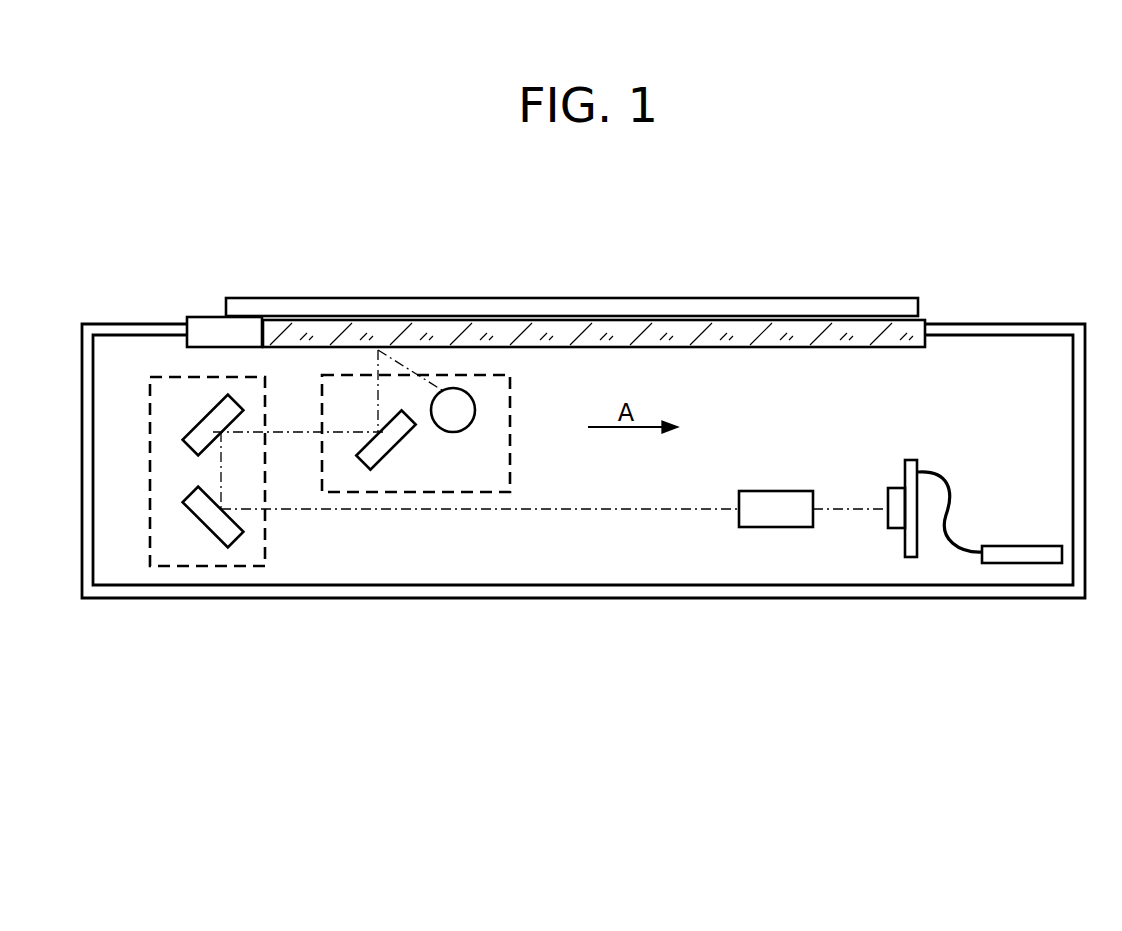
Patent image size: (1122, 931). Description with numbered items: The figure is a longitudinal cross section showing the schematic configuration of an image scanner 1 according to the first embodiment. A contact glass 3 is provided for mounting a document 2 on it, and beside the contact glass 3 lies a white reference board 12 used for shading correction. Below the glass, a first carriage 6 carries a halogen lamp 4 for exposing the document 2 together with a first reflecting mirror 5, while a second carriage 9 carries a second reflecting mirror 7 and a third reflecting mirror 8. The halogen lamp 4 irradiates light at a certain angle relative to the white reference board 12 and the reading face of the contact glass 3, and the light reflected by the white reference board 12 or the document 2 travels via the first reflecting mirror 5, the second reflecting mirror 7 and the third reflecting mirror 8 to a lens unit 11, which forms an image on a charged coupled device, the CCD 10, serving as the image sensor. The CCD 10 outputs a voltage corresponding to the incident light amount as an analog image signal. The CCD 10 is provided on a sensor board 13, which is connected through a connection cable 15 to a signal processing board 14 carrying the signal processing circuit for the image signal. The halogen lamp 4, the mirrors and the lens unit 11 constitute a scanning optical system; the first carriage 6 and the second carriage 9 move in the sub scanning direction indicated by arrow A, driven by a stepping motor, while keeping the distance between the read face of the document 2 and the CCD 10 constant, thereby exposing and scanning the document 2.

The image scanner 1 is at (893, 230).
The document 2 is at (648, 297).
The contact glass 3 is at (525, 335).
The halogen lamp 4 is at (458, 432).
The first reflecting mirror 5 is at (404, 438).
The first carriage 6 is at (510, 435).
The second reflecting mirror 7 is at (205, 420).
The third reflecting mirror 8 is at (203, 524).
The second carriage 9 is at (150, 472).
The charged coupled device (CCD) 10 is at (892, 488).
The lens unit 11 is at (765, 490).
The white reference board 12 is at (205, 316).
The sensor board 13 is at (912, 459).
The signal processing board 14 is at (1022, 546).
The connection cable 15 is at (950, 484).